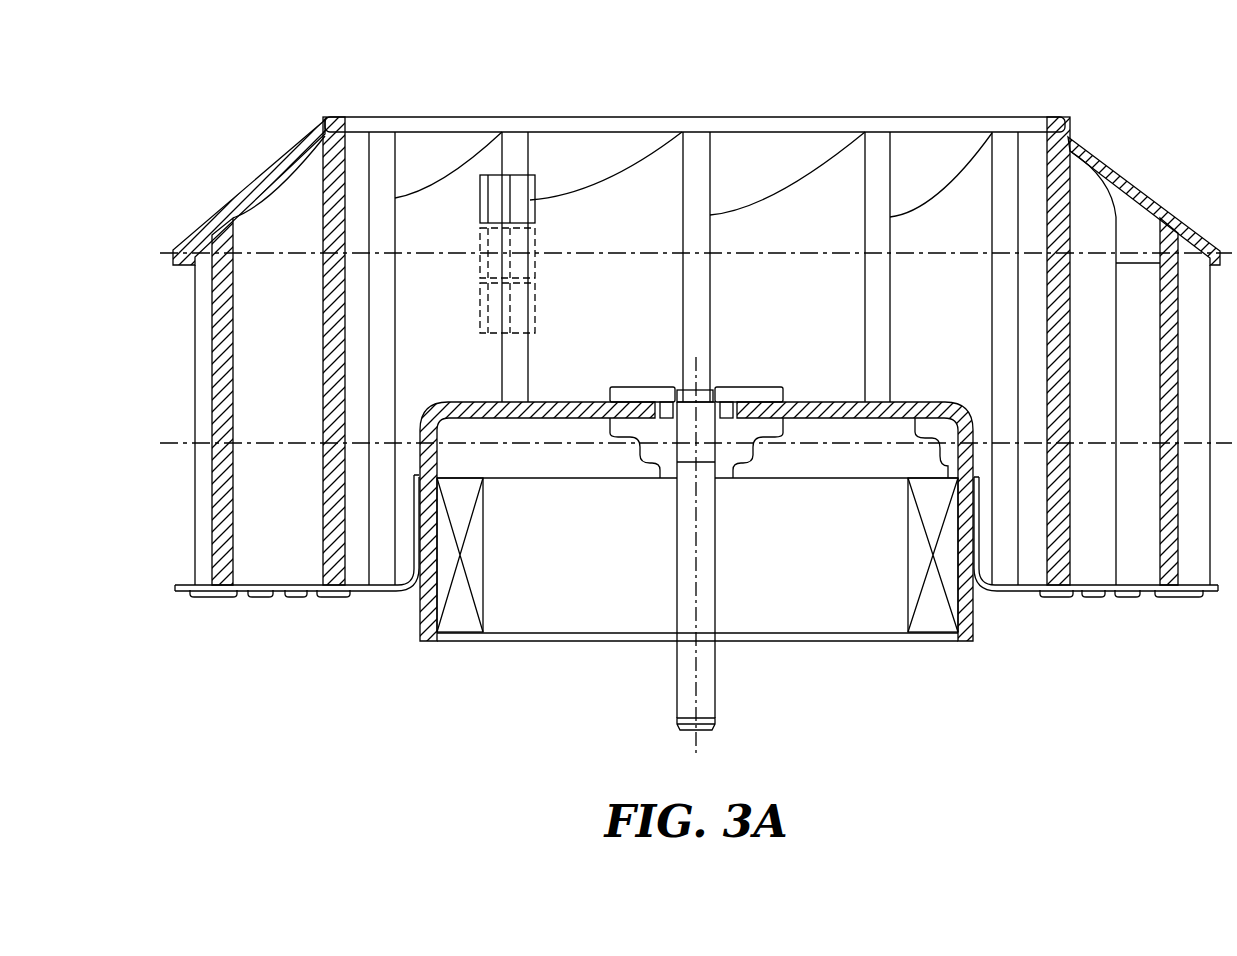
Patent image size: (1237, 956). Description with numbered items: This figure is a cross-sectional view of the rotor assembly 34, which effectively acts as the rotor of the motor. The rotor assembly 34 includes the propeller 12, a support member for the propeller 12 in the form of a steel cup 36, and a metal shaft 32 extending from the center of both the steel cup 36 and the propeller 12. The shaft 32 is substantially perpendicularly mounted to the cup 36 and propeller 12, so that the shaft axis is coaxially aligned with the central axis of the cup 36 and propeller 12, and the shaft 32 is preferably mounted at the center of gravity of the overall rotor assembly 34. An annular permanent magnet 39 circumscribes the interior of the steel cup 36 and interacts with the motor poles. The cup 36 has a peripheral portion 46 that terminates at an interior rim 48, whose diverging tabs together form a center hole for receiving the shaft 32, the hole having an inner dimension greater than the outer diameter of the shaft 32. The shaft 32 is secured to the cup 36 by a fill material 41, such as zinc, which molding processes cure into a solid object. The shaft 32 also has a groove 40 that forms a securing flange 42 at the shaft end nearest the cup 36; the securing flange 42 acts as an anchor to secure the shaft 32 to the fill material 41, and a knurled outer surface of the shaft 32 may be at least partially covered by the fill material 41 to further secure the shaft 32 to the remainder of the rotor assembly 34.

The propeller 12 is at (927, 117).
The shaft 32 is at (710, 677).
The rotor assembly 34 is at (292, 676).
The steel cup 36 is at (418, 622).
The annular permanent magnet 39 is at (473, 583).
The groove 40 is at (727, 398).
The fill material 41 is at (730, 453).
The securing flange 42 is at (712, 392).
The peripheral portion 46 is at (548, 432).
The interior rim 48 is at (738, 389).